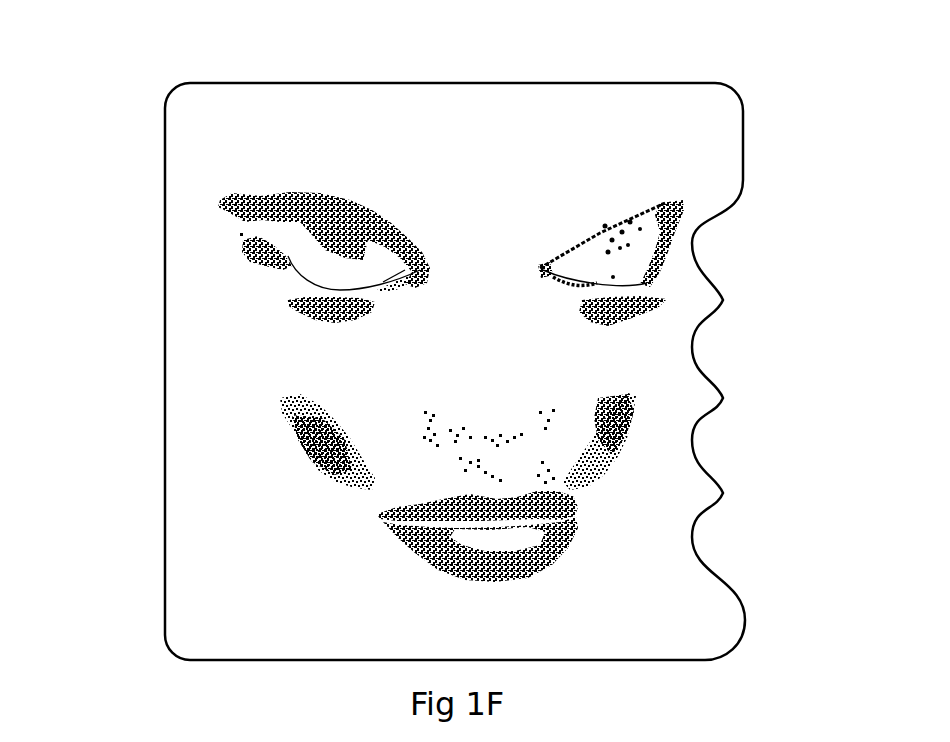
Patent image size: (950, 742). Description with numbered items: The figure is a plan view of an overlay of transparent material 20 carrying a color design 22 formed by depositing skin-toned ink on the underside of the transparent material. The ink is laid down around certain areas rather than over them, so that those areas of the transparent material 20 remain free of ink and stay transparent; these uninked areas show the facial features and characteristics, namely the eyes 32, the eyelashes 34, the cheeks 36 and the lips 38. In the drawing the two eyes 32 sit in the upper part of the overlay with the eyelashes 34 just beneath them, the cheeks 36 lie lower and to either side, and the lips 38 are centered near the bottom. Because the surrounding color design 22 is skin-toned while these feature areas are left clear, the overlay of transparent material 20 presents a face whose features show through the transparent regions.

The overlay of transparent material 20 is at (742, 605).
The color design on transparent material 22 is at (553, 173).
The facial features-eyes 32 is at (220, 195).
The facial features-eyelashes 34 is at (275, 305).
The facial features-cheeks 36 is at (283, 413).
The facial features-lips 38 is at (377, 518).